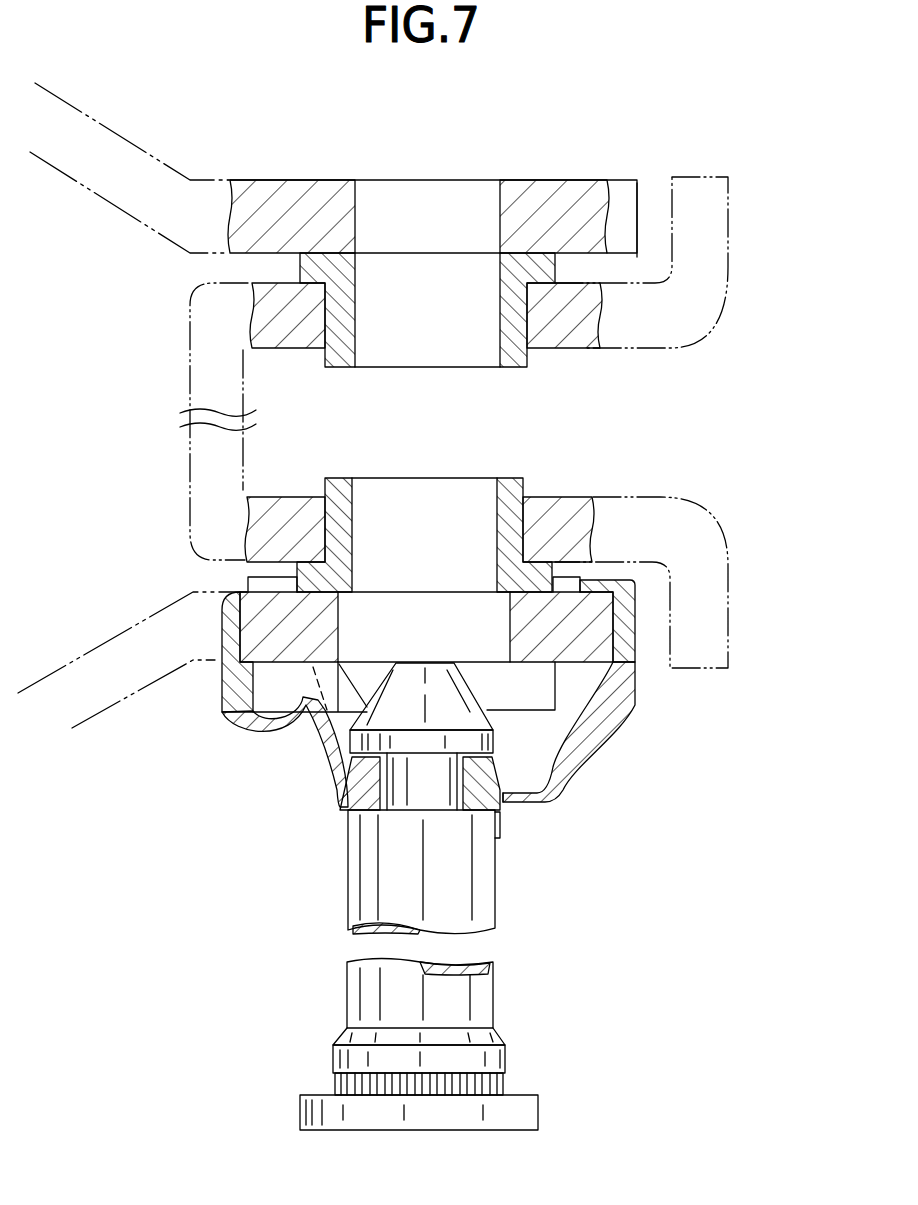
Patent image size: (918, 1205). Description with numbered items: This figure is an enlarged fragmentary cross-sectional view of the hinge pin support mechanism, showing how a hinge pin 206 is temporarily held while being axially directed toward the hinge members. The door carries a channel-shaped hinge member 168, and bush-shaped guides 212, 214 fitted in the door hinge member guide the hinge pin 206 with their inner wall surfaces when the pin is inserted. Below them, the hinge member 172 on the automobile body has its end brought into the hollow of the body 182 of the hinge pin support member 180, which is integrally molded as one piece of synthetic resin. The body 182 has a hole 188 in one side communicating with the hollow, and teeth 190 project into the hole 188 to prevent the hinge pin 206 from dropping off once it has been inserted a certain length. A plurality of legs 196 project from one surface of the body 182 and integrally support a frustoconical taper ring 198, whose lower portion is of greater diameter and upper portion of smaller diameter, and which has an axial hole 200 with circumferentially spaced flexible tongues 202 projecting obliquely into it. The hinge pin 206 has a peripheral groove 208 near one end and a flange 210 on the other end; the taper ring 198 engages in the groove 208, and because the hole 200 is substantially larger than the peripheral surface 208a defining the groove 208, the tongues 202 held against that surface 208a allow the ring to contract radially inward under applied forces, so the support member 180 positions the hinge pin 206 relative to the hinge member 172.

The hinge member 172 is at (560, 200).
The bush-shaped guide 214 is at (518, 360).
The bush-shaped guide 212 is at (508, 492).
The hinge member 168 is at (575, 512).
The body 182 is at (623, 640).
The hole 188 is at (538, 695).
The legs 196 is at (459, 734).
The teeth 190 is at (282, 726).
The peripheral groove 208 is at (352, 760).
The peripheral surface 208a is at (438, 800).
The axial hole 200 is at (380, 796).
The flexible tongues 202 is at (500, 770).
The taper ring 198 is at (505, 805).
The hinge pin support member 180 is at (623, 813).
The hinge pin 206 is at (455, 905).
The flange 210 is at (507, 1113).